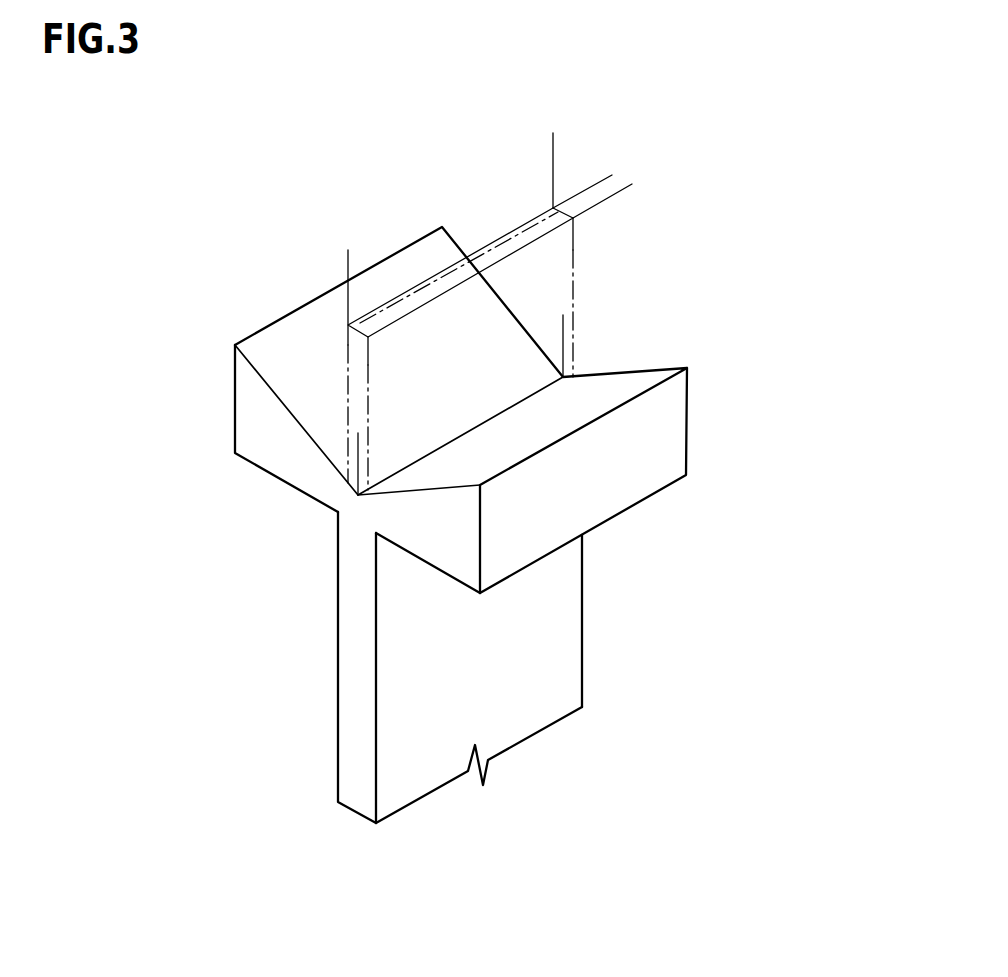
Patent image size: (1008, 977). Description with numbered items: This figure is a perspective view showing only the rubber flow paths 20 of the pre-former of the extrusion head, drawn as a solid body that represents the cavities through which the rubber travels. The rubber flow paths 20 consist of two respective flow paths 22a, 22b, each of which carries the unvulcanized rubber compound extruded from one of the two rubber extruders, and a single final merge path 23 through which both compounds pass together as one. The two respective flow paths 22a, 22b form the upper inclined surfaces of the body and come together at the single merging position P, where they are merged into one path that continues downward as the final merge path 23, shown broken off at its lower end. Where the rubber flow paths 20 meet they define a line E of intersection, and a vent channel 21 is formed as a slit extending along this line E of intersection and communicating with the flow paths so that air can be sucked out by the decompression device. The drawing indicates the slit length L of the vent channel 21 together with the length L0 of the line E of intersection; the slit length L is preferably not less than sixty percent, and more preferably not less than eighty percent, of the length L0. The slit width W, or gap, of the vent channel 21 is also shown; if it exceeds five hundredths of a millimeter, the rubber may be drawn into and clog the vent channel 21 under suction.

The rubber flow paths 20 is at (461, 525).
The vent channel 21 is at (573, 288).
The respective flow path 22a is at (235, 397).
The respective flow path 22b is at (685, 420).
The final merge path 23 is at (338, 657).
The merging position P is at (580, 368).
The slit length L is at (553, 140).
The length of the line of intersection L0 is at (563, 323).
The slit width W is at (573, 160).
The line of intersection E is at (460, 437).